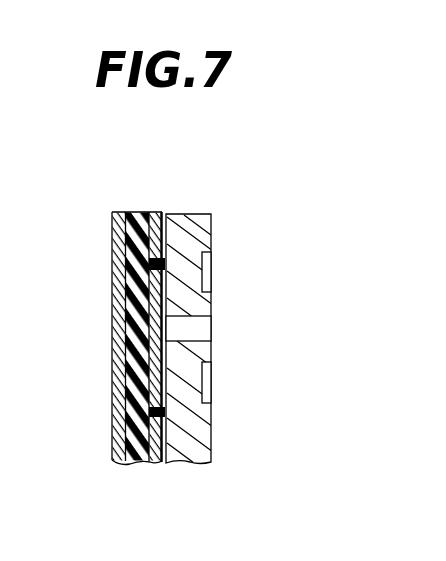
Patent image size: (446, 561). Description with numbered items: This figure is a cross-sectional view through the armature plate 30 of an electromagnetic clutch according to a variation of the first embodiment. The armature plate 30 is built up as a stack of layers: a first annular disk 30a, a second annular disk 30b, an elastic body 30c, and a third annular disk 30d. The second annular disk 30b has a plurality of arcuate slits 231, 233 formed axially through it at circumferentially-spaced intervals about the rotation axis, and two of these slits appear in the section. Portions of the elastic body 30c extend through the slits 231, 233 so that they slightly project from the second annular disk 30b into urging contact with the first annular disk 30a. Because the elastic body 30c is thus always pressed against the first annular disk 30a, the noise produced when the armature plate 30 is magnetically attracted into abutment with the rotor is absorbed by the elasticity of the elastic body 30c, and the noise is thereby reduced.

The armature plate 30 is at (320, 172).
The first annular disk 30a is at (195, 215).
The second annular disk 30b is at (157, 212).
The elastic body 30c is at (137, 212).
The third annular disk 30d is at (112, 220).
The arcuate slit 231 is at (167, 272).
The arcuate slit 233 is at (165, 411).